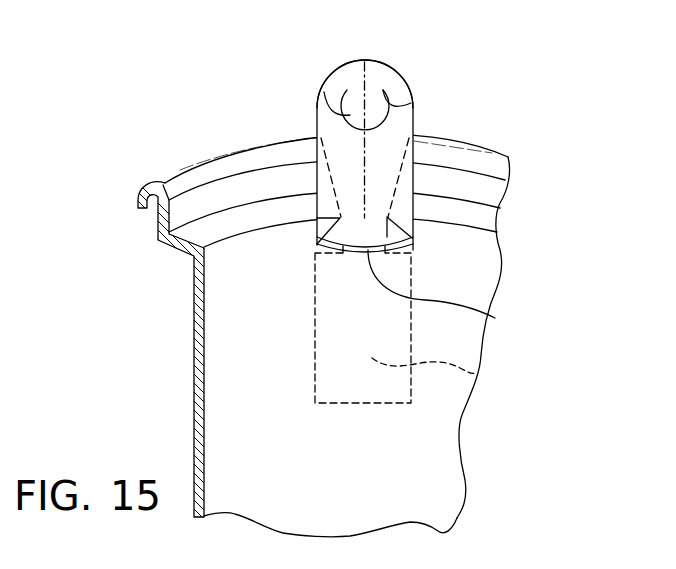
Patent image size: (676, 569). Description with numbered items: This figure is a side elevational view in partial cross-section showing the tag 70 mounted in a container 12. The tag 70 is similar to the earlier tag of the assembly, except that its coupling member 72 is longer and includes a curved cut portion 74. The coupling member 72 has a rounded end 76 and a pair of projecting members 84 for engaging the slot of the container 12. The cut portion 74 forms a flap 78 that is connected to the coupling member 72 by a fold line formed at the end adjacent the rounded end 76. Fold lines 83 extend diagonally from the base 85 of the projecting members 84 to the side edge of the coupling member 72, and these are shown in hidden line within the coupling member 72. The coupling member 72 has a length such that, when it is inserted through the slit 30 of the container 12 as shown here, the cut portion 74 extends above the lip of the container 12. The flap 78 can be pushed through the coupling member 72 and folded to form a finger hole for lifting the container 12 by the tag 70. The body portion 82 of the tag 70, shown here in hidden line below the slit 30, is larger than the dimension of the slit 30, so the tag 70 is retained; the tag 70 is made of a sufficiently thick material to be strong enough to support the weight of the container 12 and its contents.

The container 12 is at (194, 340).
The slit 30 is at (445, 289).
The tag 70 is at (415, 115).
The coupling member 72 is at (413, 158).
The cut portion 74 is at (412, 100).
The rounded end 76 is at (364, 62).
The flap 78 is at (350, 114).
The body portion 82 is at (477, 374).
The fold lines 83 is at (330, 182).
The projecting members 84 is at (313, 231).
The base 85 is at (317, 218).